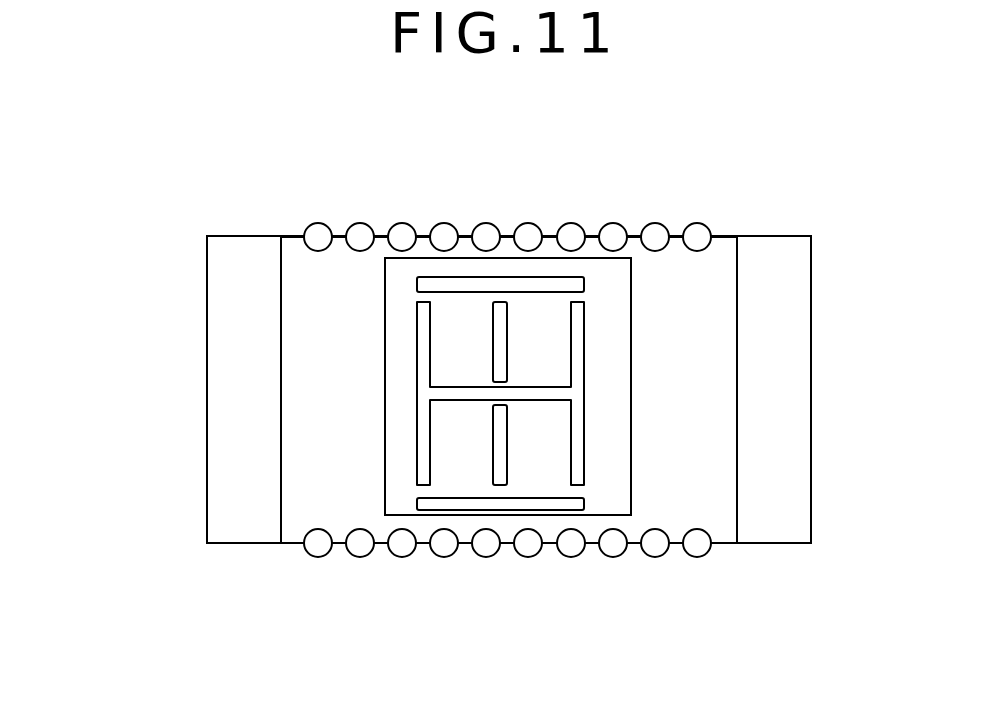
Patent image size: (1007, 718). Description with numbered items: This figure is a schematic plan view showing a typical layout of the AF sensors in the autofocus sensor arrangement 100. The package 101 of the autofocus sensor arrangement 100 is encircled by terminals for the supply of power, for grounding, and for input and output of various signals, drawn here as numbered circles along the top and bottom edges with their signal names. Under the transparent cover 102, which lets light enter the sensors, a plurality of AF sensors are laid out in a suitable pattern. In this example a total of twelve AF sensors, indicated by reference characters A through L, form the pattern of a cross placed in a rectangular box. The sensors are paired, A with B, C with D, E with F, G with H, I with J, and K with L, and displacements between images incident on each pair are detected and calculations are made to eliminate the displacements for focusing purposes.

The autofocus sensor arrangement 100 is at (230, 222).
The package 101 is at (765, 236).
The transparent cover 102 is at (333, 358).